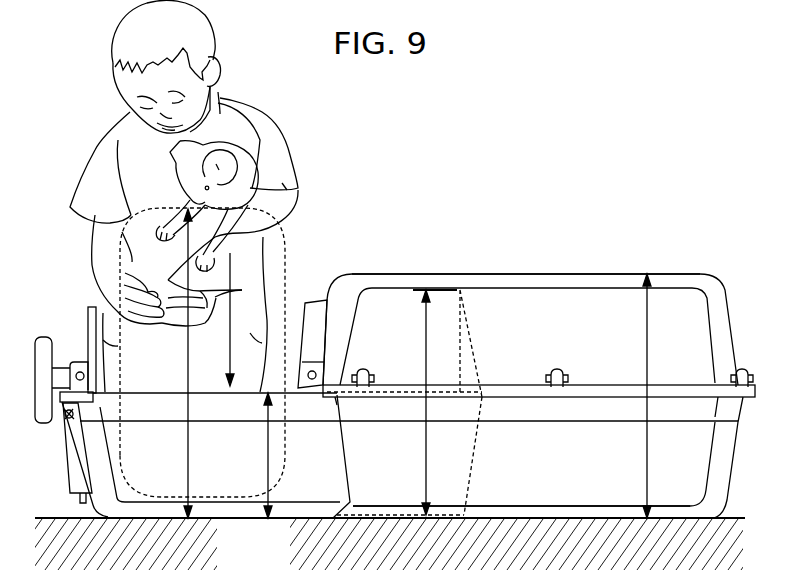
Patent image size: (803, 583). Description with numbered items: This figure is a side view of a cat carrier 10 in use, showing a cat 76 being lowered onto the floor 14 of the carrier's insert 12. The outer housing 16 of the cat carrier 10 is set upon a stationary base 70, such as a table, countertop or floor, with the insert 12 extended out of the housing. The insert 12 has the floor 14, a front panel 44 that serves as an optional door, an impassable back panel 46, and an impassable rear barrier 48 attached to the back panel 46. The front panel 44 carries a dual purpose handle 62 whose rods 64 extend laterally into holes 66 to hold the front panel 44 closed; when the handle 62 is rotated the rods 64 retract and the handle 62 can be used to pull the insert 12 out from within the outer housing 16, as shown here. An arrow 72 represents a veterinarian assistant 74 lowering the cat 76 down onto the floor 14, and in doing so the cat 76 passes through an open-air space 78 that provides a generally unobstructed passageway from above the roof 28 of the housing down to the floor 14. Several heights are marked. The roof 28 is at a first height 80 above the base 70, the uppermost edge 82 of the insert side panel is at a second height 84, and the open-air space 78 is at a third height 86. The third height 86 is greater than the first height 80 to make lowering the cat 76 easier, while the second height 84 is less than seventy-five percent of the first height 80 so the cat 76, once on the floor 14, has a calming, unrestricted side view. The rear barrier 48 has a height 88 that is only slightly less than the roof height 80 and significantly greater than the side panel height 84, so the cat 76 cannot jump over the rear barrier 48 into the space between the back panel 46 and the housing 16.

The cat carrier 10 is at (670, 196).
The insert 12 is at (65, 466).
The floor 14 is at (217, 519).
The outer housing 16 is at (553, 273).
The roof 28 is at (598, 273).
The front panel 44 is at (68, 306).
The back panel 46 is at (475, 457).
The rear barrier 48 is at (474, 331).
The handle 62 is at (45, 425).
The rods 64 is at (80, 371).
The holes 66 is at (311, 383).
The stationary base 70 is at (590, 517).
The arrow 72 is at (230, 352).
The veterinarian assistant 74 is at (113, 79).
The cat 76 is at (257, 154).
The open-air space 78 is at (291, 292).
The first height 80 is at (667, 396).
The uppermost edge 82 is at (137, 392).
The second height 84 is at (268, 457).
The third height 86 is at (188, 443).
The height of rear barrier 88 is at (425, 338).